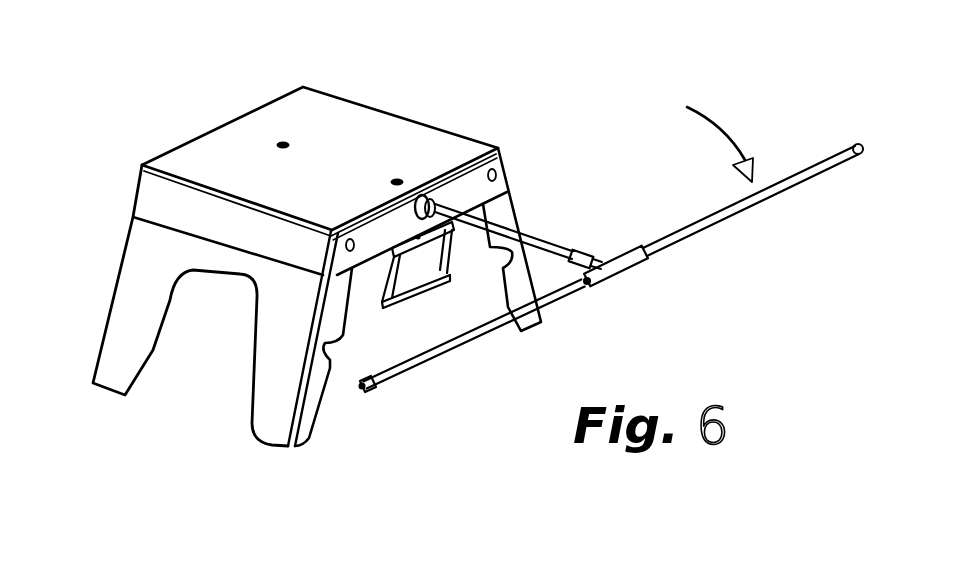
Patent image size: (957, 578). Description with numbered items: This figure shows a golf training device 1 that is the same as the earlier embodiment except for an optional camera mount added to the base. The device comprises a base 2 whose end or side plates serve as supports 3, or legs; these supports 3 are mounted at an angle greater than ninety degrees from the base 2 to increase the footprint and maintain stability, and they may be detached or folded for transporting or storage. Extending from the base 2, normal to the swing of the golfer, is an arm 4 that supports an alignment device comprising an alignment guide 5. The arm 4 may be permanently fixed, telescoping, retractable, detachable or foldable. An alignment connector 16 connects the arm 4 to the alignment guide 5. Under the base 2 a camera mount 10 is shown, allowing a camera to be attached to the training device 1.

The golf training device 1 is at (248, 71).
The base 2 is at (318, 122).
The supports 3 is at (153, 267).
The arm 4 is at (547, 240).
The alignment guide 5 is at (445, 360).
The alignment connector 16 is at (623, 272).
The camera mount 10 is at (380, 293).